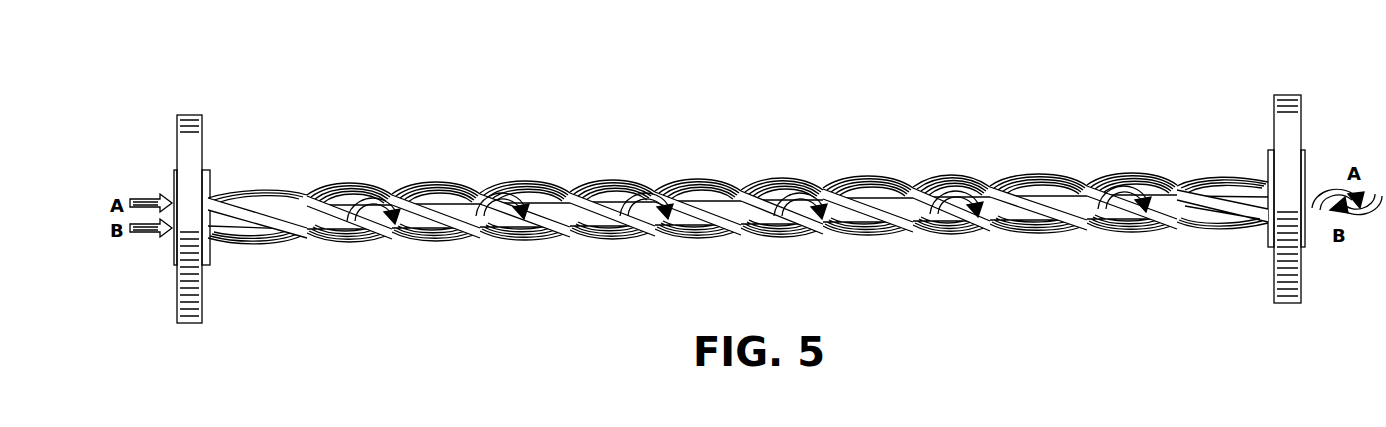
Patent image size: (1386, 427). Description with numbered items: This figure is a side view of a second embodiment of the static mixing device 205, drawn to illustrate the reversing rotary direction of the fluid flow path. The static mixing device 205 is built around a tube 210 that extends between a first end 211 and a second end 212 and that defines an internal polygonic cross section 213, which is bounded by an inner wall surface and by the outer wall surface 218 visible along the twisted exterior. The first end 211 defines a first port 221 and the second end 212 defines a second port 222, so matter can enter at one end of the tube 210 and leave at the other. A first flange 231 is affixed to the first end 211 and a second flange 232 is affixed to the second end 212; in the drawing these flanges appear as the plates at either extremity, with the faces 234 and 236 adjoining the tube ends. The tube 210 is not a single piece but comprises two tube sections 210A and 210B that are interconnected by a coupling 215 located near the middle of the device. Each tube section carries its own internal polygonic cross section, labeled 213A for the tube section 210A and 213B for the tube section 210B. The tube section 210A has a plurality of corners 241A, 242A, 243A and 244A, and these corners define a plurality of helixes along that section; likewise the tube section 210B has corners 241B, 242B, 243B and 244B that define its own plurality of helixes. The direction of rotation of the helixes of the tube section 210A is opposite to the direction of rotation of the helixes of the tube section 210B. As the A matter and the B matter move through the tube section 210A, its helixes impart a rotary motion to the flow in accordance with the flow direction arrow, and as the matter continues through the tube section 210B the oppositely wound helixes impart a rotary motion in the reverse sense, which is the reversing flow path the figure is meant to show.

The static mixing device 205 is at (350, 137).
The tube 210 is at (552, 198).
The tube section 210A is at (438, 184).
The tube section 210B is at (869, 178).
The first end 211 is at (233, 196).
The second end 212 is at (1257, 180).
The internal polygonic cross section 213 is at (792, 180).
The internal polygonic cross section 213A is at (668, 170).
The internal polygonic cross section 213B is at (1101, 172).
The coupling 215 is at (741, 207).
The outer wall surface 218 is at (977, 180).
The first port 221 is at (250, 258).
The second port 222 is at (1235, 228).
The first flange 231 is at (188, 115).
The second flange 232 is at (1287, 95).
The first plate mounting face 234 is at (203, 135).
The second plate mounting face 236 is at (1273, 123).
The corner 241A is at (438, 243).
The corner 242A is at (517, 240).
The corner 243A is at (610, 239).
The corner 244A is at (702, 238).
The corner 241B is at (867, 234).
The corner 242B is at (948, 235).
The corner 243B is at (1035, 233).
The corner 244B is at (1132, 233).